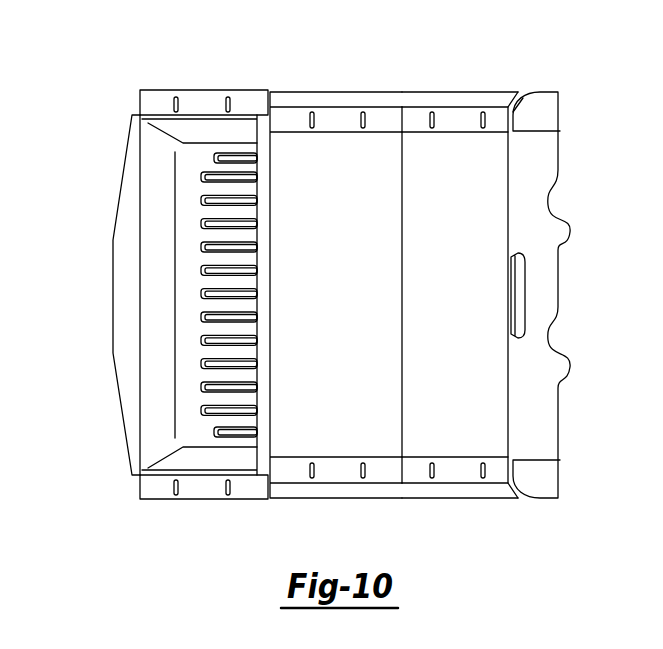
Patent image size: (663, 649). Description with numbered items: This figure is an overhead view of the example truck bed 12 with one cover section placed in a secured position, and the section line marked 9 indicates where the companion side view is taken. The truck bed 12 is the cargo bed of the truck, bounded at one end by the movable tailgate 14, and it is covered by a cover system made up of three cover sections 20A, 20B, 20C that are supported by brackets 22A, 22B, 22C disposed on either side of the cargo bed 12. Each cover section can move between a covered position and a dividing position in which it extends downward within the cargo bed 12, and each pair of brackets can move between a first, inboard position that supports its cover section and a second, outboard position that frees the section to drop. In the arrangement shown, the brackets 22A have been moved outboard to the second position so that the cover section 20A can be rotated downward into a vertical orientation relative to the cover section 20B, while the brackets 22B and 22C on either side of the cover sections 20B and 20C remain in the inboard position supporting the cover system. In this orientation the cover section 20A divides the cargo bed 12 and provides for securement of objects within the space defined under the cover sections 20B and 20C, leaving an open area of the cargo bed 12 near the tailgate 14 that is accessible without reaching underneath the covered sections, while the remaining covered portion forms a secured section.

The section line of FIG. 9 is at (48, 296).
The truck bed 12 is at (185, 360).
The movable tailgate 14 is at (115, 276).
The cover section 20A is at (262, 225).
The cover section 20B is at (320, 319).
The cover section 20C is at (428, 319).
The bracket 22A is at (242, 95).
The bracket 22B is at (371, 115).
The bracket 22C is at (480, 115).